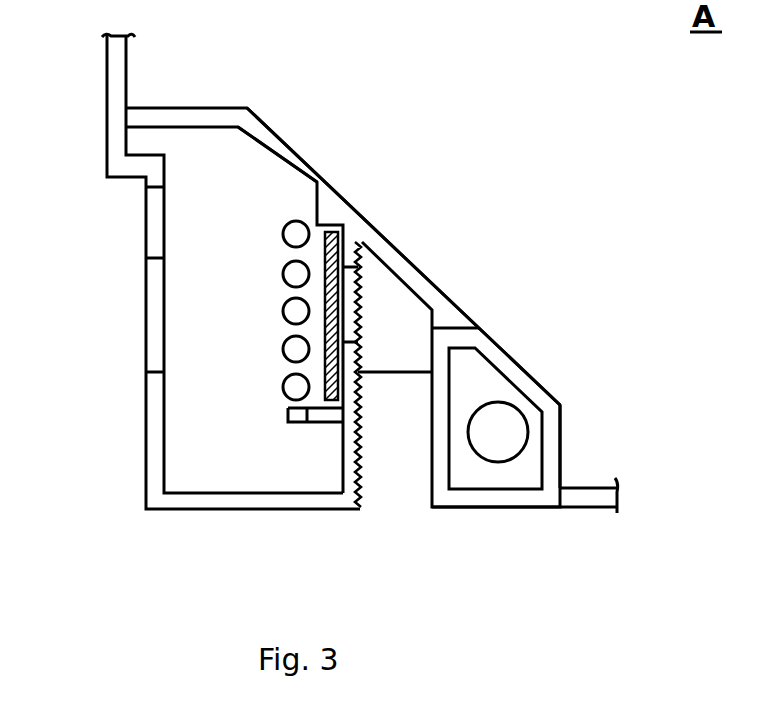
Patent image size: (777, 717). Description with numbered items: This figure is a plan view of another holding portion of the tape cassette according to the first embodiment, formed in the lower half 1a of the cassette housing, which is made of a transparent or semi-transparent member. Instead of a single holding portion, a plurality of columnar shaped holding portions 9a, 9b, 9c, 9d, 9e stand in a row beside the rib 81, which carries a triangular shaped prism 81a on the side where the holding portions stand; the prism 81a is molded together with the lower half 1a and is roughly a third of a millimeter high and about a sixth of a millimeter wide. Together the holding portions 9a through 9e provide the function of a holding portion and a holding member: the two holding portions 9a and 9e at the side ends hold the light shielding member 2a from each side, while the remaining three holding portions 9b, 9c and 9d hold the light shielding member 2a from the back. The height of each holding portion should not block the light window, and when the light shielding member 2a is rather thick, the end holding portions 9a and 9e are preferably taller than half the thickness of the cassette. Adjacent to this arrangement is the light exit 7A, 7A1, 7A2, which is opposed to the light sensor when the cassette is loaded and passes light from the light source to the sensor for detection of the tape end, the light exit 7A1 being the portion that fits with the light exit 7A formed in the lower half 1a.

The lower half 1a is at (113, 57).
The light exit 7A is at (157, 339).
The light exit 7A1 is at (360, 292).
The light exit 7A2 is at (455, 318).
The light shielding member 2a is at (333, 228).
The rib 81 is at (352, 241).
The prism 81a is at (375, 392).
The holding portion 9a is at (287, 390).
The holding portion 9b is at (283, 353).
The holding portion 9c is at (283, 313).
The holding portion 9d is at (286, 262).
The holding portion 9e is at (290, 220).